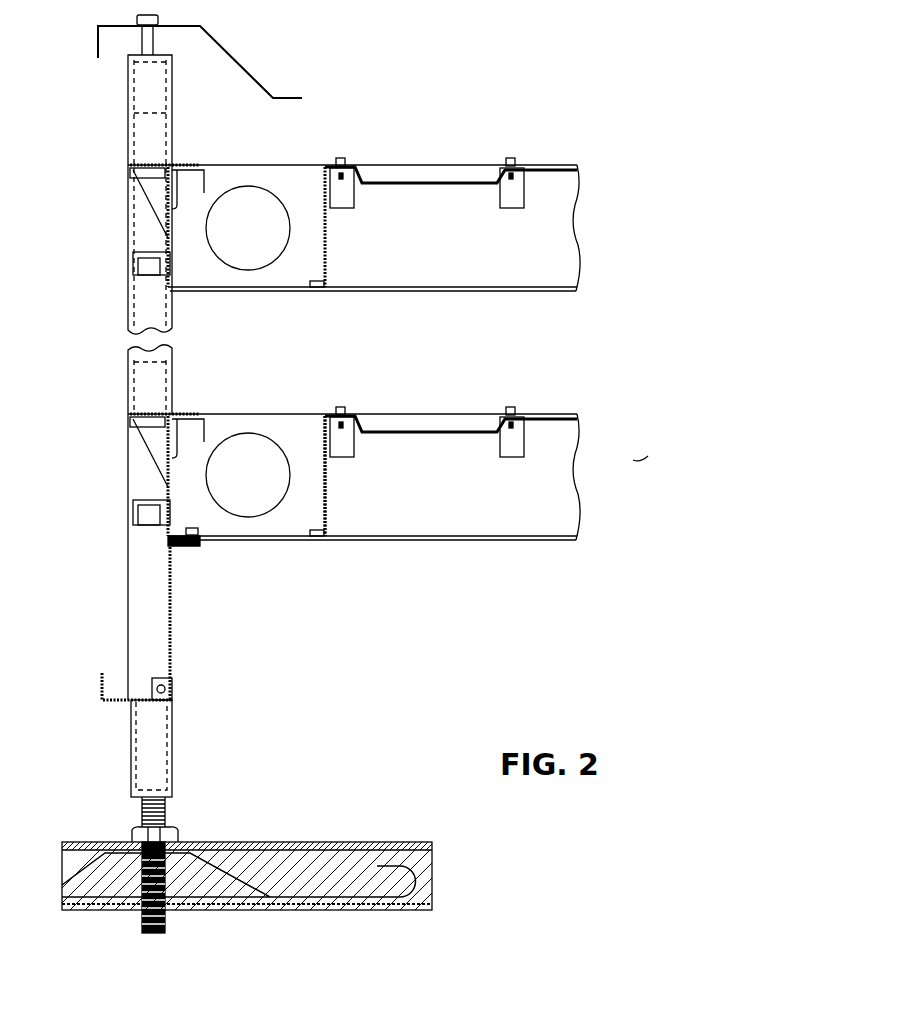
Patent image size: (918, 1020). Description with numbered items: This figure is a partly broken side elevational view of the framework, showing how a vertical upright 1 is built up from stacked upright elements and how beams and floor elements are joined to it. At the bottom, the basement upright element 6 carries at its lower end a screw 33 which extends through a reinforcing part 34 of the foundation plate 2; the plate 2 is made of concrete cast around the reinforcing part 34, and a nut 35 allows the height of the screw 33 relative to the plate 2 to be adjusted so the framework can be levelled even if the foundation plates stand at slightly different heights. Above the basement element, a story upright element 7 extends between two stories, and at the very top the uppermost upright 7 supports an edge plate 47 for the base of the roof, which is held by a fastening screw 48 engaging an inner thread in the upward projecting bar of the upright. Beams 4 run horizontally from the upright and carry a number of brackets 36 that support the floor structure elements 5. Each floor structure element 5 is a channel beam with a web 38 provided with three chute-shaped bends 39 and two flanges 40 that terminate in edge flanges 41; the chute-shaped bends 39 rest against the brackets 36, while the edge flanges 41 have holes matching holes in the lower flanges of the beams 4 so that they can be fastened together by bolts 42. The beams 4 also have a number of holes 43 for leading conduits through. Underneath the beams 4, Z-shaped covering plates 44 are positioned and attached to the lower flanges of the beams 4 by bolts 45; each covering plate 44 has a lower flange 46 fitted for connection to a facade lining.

The vertical upright 1 is at (125, 383).
The plate 2 is at (80, 842).
The beam 4 is at (188, 497).
The floor structure element 5 is at (327, 517).
The basement upright element 6 is at (150, 615).
The story upright element 7 is at (148, 302).
The screw 33 is at (140, 815).
The reinforcing part 34 is at (108, 848).
The nut 35 is at (128, 828).
The bracket 36 is at (343, 190).
The web 38 is at (440, 185).
The chute-shaped bend 39 is at (527, 175).
The flange 40 is at (323, 173).
The edge flange 41 is at (298, 210).
The bolt 42 is at (315, 205).
The hole 43 is at (232, 195).
The Z-shaped covering plate 44 is at (170, 636).
The bolt 45 is at (168, 530).
The lower flange 46 is at (118, 695).
The edge plate 47 is at (96, 48).
The fastening screw 48 is at (137, 18).